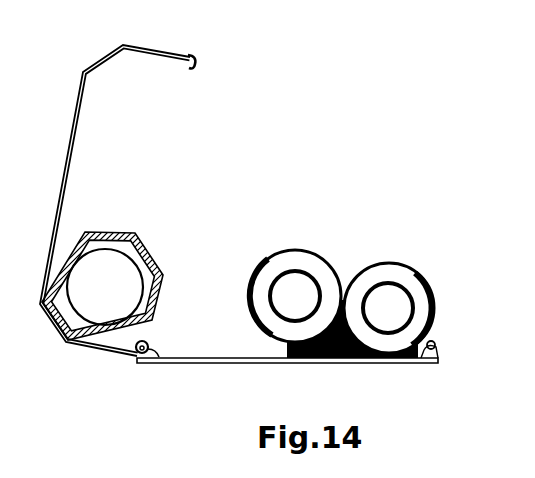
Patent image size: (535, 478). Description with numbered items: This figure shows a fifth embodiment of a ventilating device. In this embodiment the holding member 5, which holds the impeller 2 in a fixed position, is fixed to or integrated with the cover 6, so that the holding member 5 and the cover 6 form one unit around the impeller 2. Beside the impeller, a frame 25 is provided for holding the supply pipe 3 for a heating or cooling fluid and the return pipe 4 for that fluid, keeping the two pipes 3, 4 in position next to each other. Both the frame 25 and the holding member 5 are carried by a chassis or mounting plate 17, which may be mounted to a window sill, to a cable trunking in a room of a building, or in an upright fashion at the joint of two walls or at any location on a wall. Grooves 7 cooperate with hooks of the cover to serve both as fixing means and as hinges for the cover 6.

The impeller 2 is at (113, 300).
The supply pipe 3 is at (302, 265).
The return pipe 4 is at (390, 278).
The holding member 5 is at (110, 236).
The cover 6 is at (164, 54).
The grooves 7 is at (437, 337).
The chassis or mounting plate 17 is at (197, 364).
The frame 25 is at (331, 359).